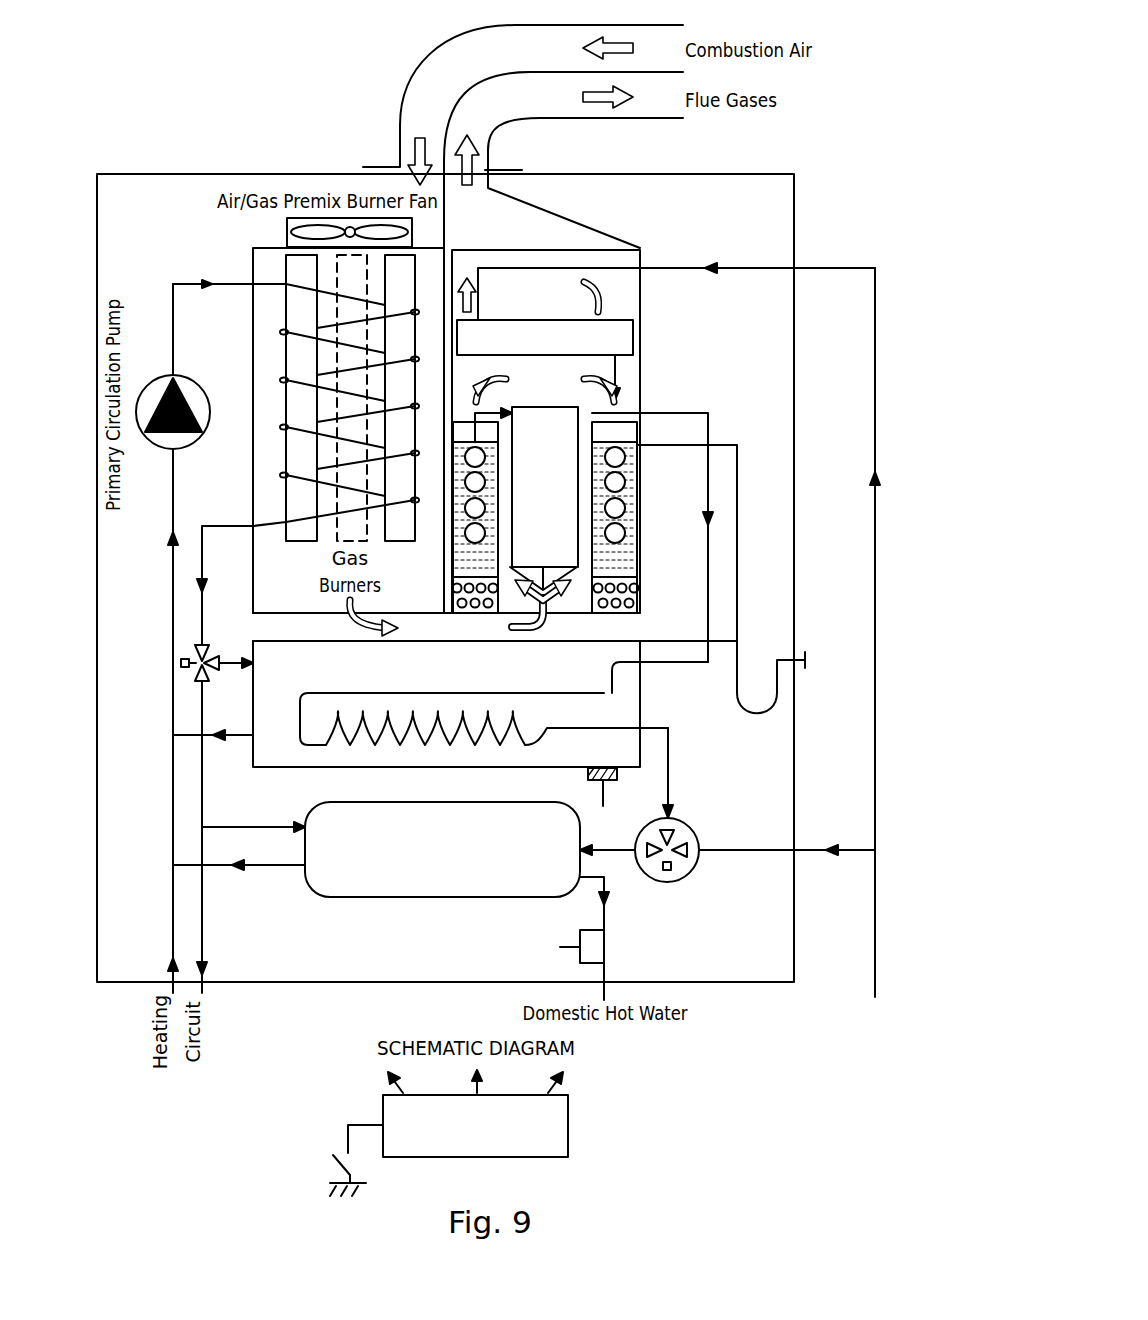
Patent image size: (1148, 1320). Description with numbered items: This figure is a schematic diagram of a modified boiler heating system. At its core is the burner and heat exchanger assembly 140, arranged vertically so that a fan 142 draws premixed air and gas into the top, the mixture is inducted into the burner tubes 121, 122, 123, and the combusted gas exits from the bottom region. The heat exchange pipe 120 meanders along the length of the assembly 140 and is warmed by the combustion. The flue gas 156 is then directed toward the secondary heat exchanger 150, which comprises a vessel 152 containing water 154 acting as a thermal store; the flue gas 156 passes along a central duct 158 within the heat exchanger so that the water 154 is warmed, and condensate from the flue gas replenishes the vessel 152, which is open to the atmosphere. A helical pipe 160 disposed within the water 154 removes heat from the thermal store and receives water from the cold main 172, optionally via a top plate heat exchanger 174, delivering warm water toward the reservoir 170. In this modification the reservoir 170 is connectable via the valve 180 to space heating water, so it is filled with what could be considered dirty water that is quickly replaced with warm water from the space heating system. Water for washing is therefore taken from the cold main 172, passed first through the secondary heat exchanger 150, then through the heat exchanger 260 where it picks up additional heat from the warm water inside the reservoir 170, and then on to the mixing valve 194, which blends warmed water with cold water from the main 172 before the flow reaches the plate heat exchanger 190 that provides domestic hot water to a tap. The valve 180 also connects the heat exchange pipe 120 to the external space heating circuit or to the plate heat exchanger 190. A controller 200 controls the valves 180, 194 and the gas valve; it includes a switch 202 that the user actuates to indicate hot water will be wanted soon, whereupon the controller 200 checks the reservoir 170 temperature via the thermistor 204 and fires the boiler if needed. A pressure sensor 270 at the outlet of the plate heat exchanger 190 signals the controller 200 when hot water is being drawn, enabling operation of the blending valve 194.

The heat exchange pipe 120 is at (286, 476).
The burner tube 121 is at (290, 547).
The burner tube 122 is at (335, 452).
The burner tube 123 is at (400, 547).
The burner and heat exchanger assembly 140 is at (243, 247).
The fan 142 is at (287, 230).
The secondary heat exchanger 150 is at (718, 432).
The vessel 152 is at (605, 435).
The water 154 is at (640, 573).
The flue gas 156 is at (545, 620).
The central duct 158 is at (583, 423).
The helical pipe 160 is at (737, 445).
The reservoir 170 is at (640, 680).
The cold water main 172 is at (873, 910).
The top plate heat exchanger 174 is at (540, 320).
The valve 180 is at (200, 681).
The plate heat exchanger 190 is at (388, 899).
The mixing valve 194 is at (665, 881).
The controller 200 is at (575, 1095).
The switch 202 is at (340, 1180).
The thermistor 204 is at (617, 772).
The heat exchanger 260 is at (318, 748).
The pressure sensor 270 is at (580, 937).